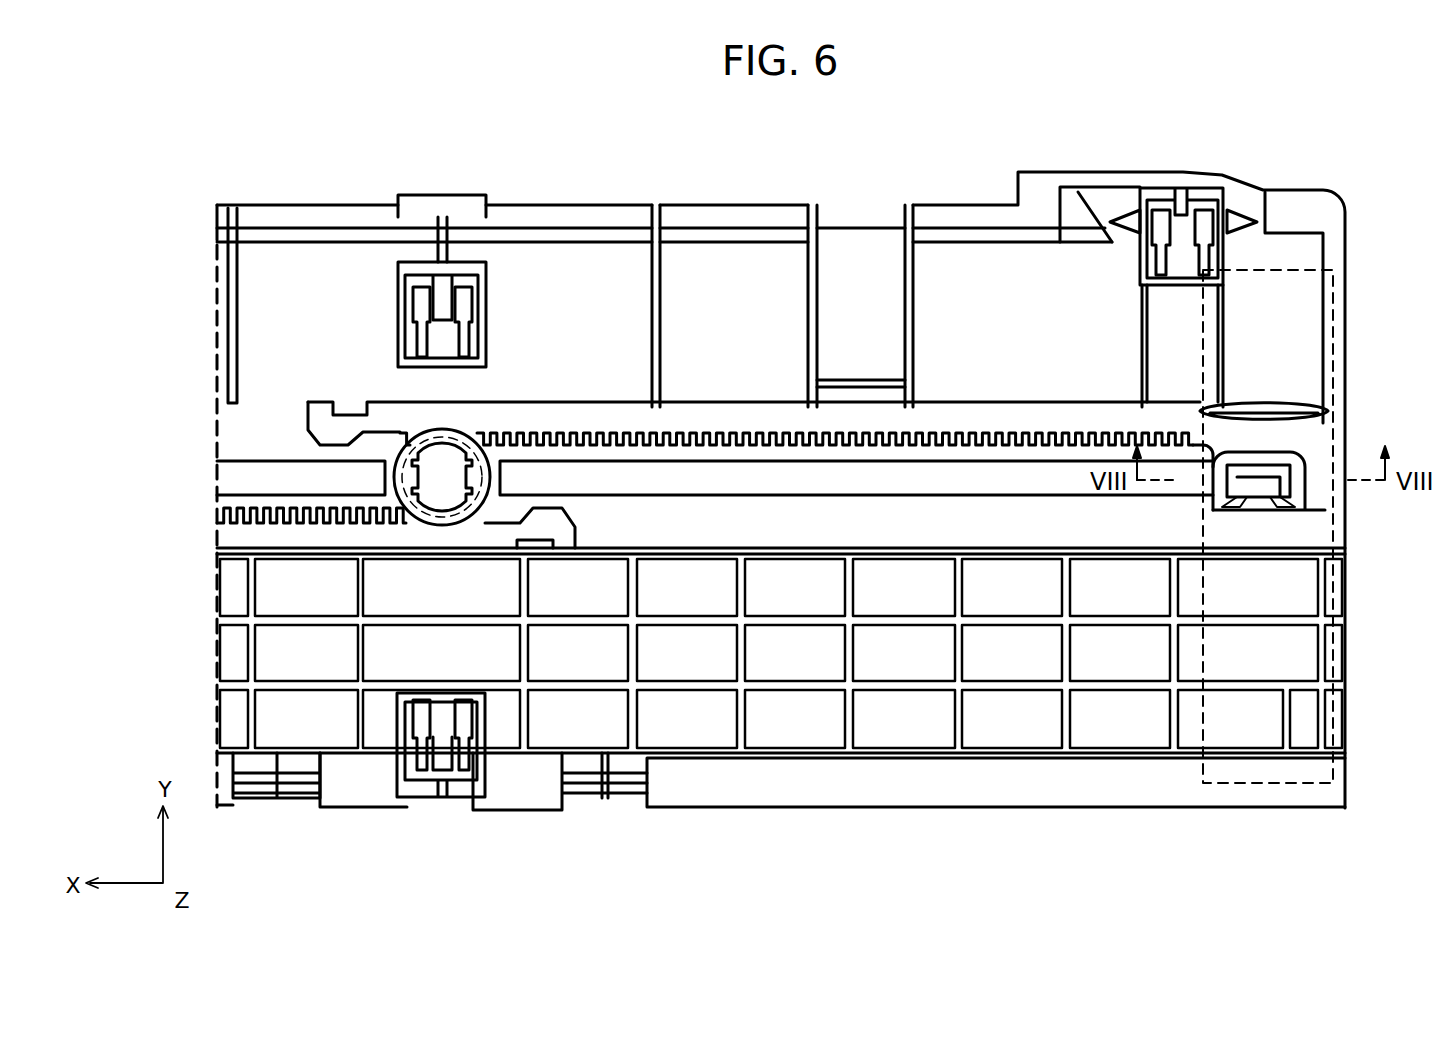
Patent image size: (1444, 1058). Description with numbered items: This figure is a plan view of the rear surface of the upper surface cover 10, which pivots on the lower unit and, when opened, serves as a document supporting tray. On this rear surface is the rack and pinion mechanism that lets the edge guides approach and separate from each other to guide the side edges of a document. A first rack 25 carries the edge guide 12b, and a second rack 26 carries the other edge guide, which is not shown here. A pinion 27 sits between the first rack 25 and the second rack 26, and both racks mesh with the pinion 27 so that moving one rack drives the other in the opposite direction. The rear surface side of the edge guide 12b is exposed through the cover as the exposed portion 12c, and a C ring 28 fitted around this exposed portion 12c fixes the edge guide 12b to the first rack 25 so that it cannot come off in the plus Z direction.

The upper surface cover 10 is at (950, 255).
The first rack 25 is at (745, 410).
The second rack 26 is at (333, 530).
The pinion 27 is at (444, 432).
The C ring 28 is at (1297, 470).
The edge guide 12b is at (1203, 667).
The exposed portion 12c is at (1258, 452).